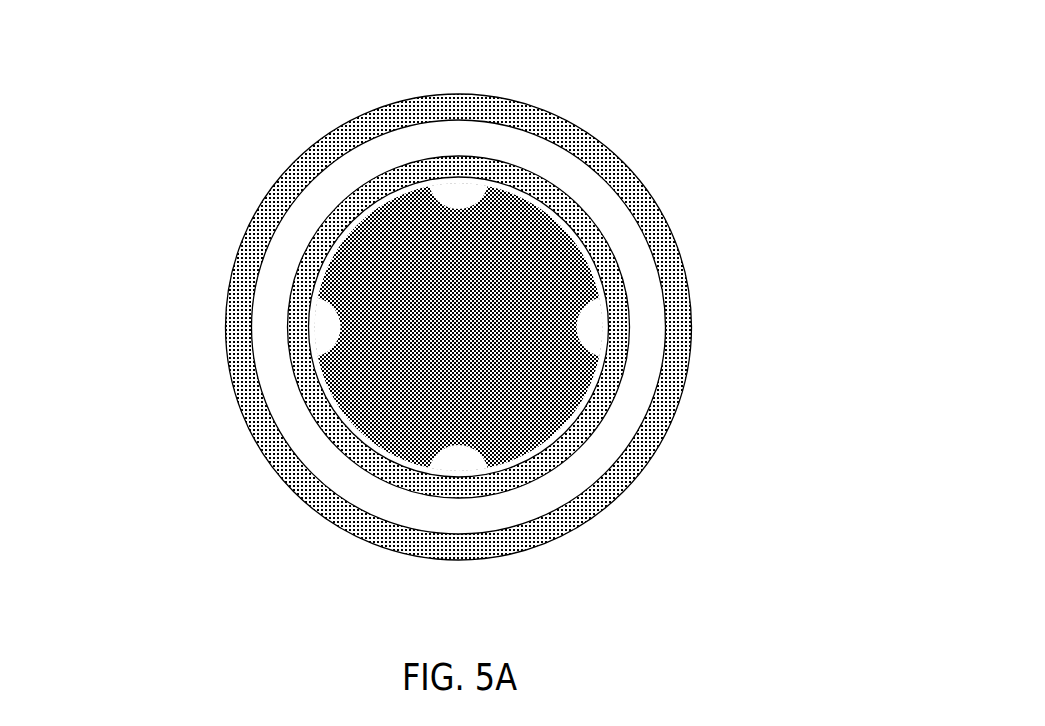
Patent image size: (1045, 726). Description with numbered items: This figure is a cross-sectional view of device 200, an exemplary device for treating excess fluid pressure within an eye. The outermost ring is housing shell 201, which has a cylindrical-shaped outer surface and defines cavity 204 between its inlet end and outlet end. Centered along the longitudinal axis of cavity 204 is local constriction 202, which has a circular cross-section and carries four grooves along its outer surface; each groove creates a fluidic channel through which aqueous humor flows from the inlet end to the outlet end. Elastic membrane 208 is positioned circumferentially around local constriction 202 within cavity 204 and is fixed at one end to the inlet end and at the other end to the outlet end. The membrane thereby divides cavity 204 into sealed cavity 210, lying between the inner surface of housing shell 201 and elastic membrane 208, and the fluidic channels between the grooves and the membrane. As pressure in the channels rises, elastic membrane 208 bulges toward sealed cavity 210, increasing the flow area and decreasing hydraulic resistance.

The device 200 is at (520, 72).
The housing shell 201 is at (657, 442).
The sealed cavity 210 is at (337, 180).
The elastic membrane 208 is at (620, 335).
The cavity 204 is at (318, 322).
The local constriction 202 is at (530, 247).